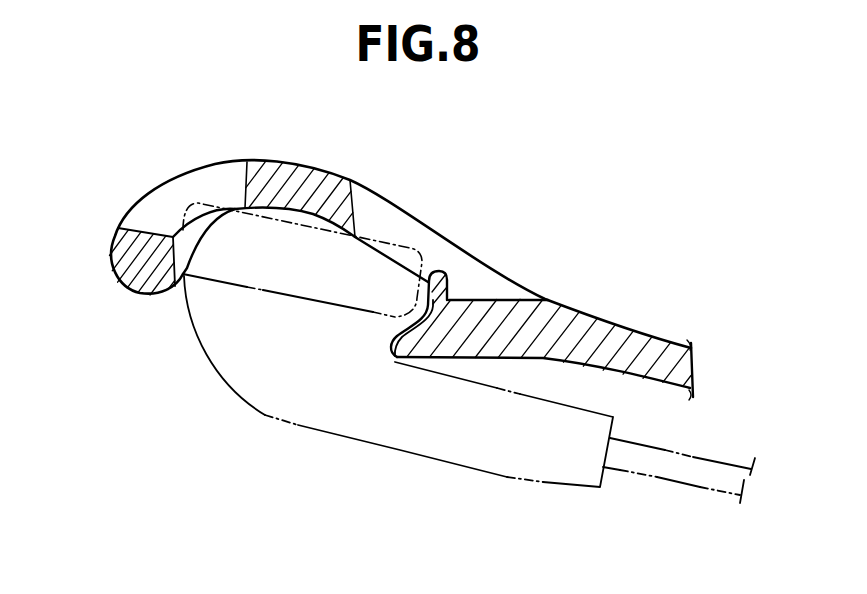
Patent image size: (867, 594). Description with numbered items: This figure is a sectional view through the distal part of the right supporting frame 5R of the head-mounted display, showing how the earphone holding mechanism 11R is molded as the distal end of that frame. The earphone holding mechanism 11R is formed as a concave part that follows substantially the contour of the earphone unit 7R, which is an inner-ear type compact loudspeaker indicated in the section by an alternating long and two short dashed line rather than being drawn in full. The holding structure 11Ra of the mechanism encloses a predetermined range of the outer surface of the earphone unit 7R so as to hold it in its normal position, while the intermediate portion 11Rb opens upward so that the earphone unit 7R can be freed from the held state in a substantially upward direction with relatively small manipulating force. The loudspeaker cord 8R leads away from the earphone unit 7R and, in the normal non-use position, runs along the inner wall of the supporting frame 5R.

The supporting frame 5R is at (582, 305).
The earphone unit 7R is at (343, 420).
The loudspeaker cord 8R is at (680, 470).
The earphone holding mechanism 11R is at (280, 173).
The holding structure 11Ra is at (133, 250).
The intermediate portion 11Rb is at (180, 286).